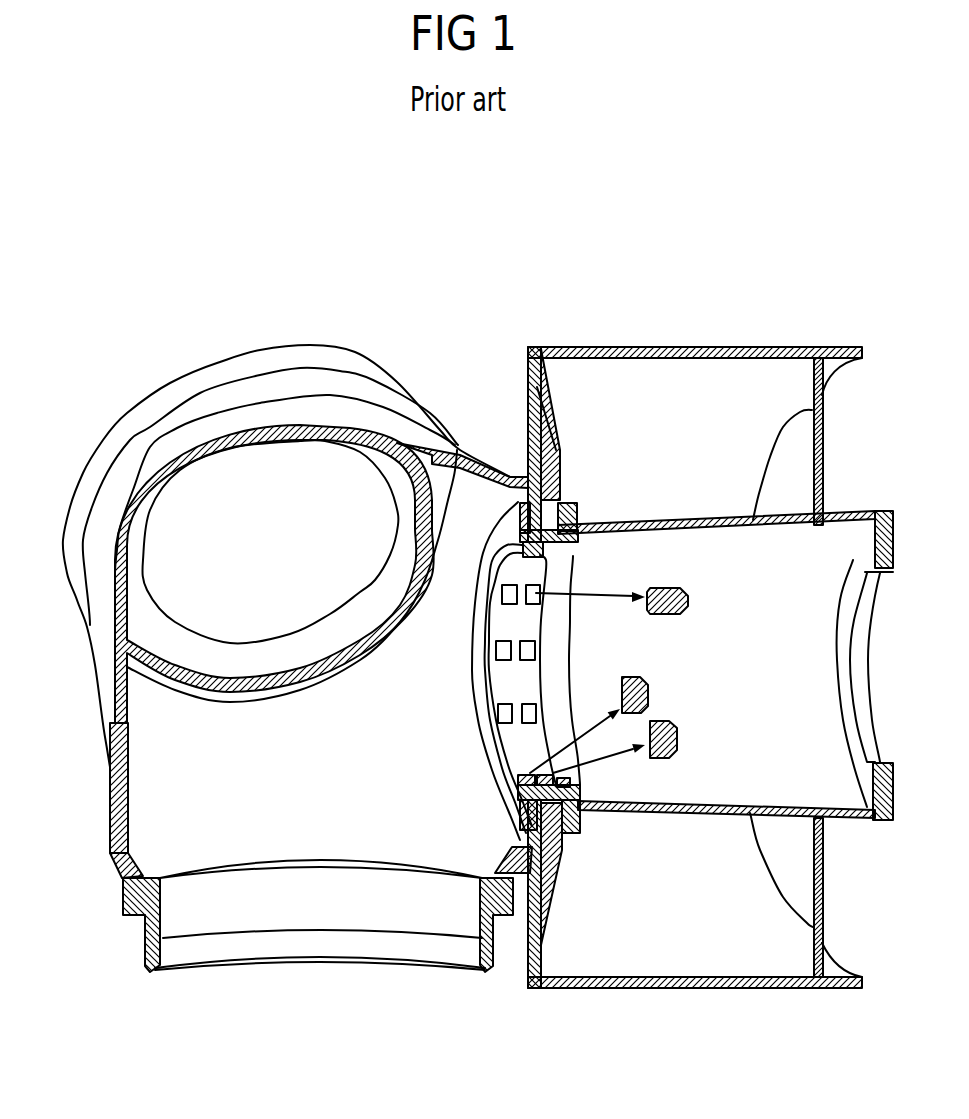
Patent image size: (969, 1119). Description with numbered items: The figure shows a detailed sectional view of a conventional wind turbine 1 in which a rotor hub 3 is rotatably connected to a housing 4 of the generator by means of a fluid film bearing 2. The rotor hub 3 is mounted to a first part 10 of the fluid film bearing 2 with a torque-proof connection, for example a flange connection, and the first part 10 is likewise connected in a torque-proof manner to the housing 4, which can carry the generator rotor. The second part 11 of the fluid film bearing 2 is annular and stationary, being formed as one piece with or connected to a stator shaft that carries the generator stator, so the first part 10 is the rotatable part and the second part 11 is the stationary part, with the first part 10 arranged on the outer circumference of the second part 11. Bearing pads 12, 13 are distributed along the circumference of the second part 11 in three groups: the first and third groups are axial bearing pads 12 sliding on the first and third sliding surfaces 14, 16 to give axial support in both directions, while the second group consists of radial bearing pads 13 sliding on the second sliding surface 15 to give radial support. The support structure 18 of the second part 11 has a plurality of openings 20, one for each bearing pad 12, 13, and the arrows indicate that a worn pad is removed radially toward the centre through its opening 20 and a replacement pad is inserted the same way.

The wind turbine 1 is at (174, 255).
The fluid film bearing 2 is at (516, 458).
The rotor hub 3 is at (110, 826).
The housing 4 is at (702, 346).
The first part 10 is at (550, 510).
The second part 11 is at (510, 678).
The axial bearing pads 12 is at (647, 681).
The radial bearing pads 13 is at (688, 603).
The first sliding surface 14 is at (520, 492).
The second sliding surface 15 is at (525, 799).
The third sliding surface 16 is at (560, 496).
The support structure 18 is at (512, 752).
The openings 20 is at (533, 593).